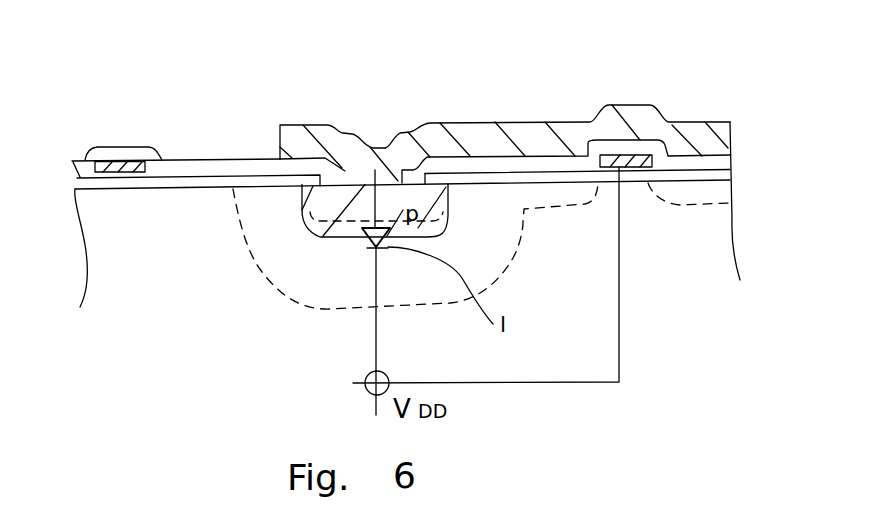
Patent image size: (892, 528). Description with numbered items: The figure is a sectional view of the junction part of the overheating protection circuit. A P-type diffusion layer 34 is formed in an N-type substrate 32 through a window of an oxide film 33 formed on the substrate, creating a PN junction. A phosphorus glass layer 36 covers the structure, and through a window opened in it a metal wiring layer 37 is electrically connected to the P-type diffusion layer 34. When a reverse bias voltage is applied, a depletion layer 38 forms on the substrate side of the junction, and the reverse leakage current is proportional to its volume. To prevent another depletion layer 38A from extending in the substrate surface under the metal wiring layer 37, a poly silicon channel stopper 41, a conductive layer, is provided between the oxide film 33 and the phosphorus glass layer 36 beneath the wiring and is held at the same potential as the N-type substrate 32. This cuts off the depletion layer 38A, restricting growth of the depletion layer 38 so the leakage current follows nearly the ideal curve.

The N-type substrate 32 is at (152, 220).
The oxide film 33 is at (219, 180).
The P-type diffusion layer 34 is at (335, 200).
The phosphorus glass layer 36 is at (110, 146).
The metal wiring layer 37 is at (433, 140).
The depletion layer 38 is at (505, 213).
The depletion layer 38A is at (683, 192).
The poly silicon channel stopper 41 is at (135, 161).